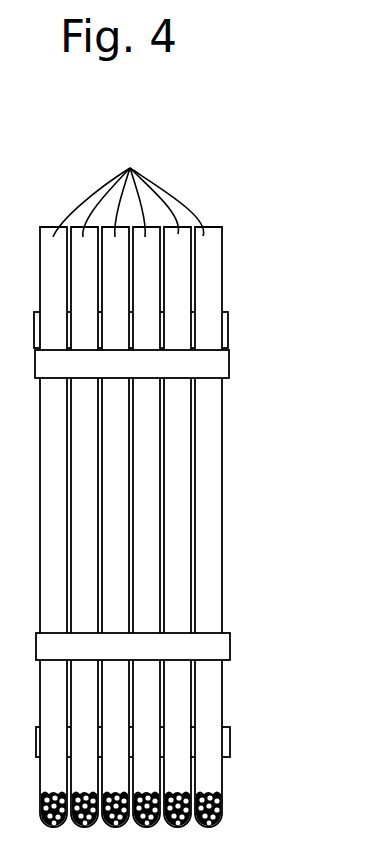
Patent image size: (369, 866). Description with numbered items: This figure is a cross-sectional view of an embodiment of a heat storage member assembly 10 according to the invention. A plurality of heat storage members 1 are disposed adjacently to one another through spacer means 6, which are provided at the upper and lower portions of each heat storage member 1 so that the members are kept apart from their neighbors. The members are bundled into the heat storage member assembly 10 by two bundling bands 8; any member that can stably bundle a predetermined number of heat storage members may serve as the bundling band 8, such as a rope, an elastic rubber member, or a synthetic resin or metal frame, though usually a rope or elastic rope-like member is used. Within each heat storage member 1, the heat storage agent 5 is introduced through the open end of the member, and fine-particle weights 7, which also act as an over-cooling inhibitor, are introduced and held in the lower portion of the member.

The heat storage member 1 is at (132, 143).
The heat storage agent 5 is at (218, 497).
The spacer means 6 is at (228, 325).
The fine-particle weights 7 is at (220, 800).
The bundling band 8 is at (218, 367).
The heat storage member assembly 10 is at (163, 458).